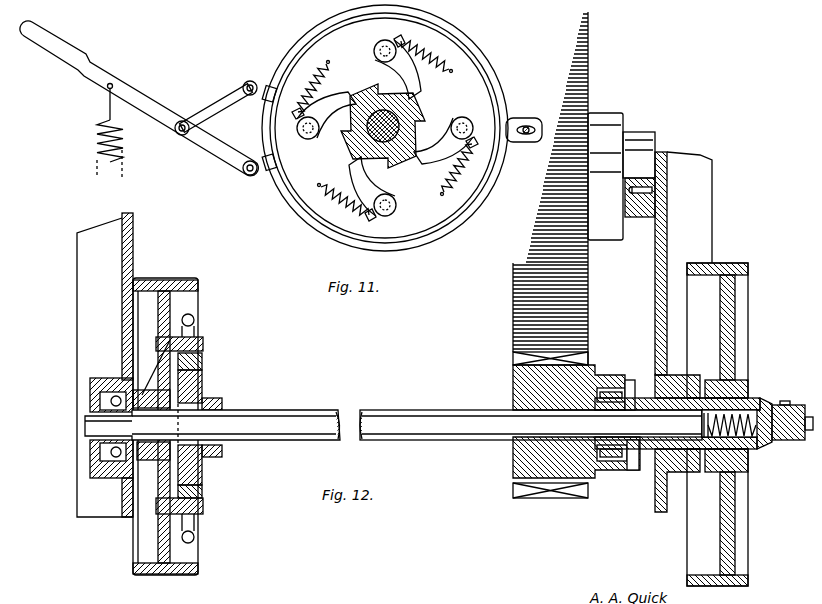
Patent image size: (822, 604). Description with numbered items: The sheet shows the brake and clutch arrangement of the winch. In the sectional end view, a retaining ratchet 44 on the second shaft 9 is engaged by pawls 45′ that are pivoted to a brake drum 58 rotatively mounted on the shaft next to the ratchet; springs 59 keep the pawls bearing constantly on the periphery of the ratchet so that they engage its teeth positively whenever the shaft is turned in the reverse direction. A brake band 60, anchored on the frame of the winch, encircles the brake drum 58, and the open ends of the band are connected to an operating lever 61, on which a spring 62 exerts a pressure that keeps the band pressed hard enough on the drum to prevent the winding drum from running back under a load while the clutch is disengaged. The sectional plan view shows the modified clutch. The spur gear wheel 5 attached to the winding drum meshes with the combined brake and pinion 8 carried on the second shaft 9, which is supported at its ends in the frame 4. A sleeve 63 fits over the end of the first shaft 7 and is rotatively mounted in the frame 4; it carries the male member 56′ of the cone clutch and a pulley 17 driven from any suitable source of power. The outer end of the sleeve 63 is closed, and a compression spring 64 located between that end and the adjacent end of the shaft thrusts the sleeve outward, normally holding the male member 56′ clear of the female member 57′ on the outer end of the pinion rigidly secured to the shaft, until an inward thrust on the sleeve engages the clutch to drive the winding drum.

In FIG. 11, the operating lever 61 is at (142, 97).
In FIG. 11, the spring 62 is at (122, 160).
In FIG. 11, the brake band 60 is at (295, 53).
In FIG. 12, the brake band 60 is at (168, 279).
In FIG. 11, the brake drum 58 is at (428, 213).
In FIG. 11, the springs 59 is at (432, 53).
In FIG. 12, the springs 59 is at (196, 319).
In FIG. 11, the pawls 45′ is at (325, 100).
In FIG. 12, the pawls 45′ is at (200, 362).
In FIG. 11, the retaining ratchet 44 is at (420, 105).
In FIG. 12, the retaining ratchet 44 is at (203, 400).
In FIG. 11, the second shaft 9 is at (413, 116).
In FIG. 12, the first shaft 7 is at (432, 410).
In FIG. 12, the spur gear wheel 5 is at (557, 231).
In FIG. 12, the combined brake and pinion 8 is at (520, 478).
In FIG. 12, the female member of the clutch 57′ is at (604, 482).
In FIG. 12, the male member of the clutch 56′ is at (632, 482).
In FIG. 12, the frame 4 is at (655, 297).
In FIG. 12, the pulley 17 is at (742, 290).
In FIG. 12, the sleeve 63 is at (762, 402).
In FIG. 12, the compression spring 64 is at (752, 448).